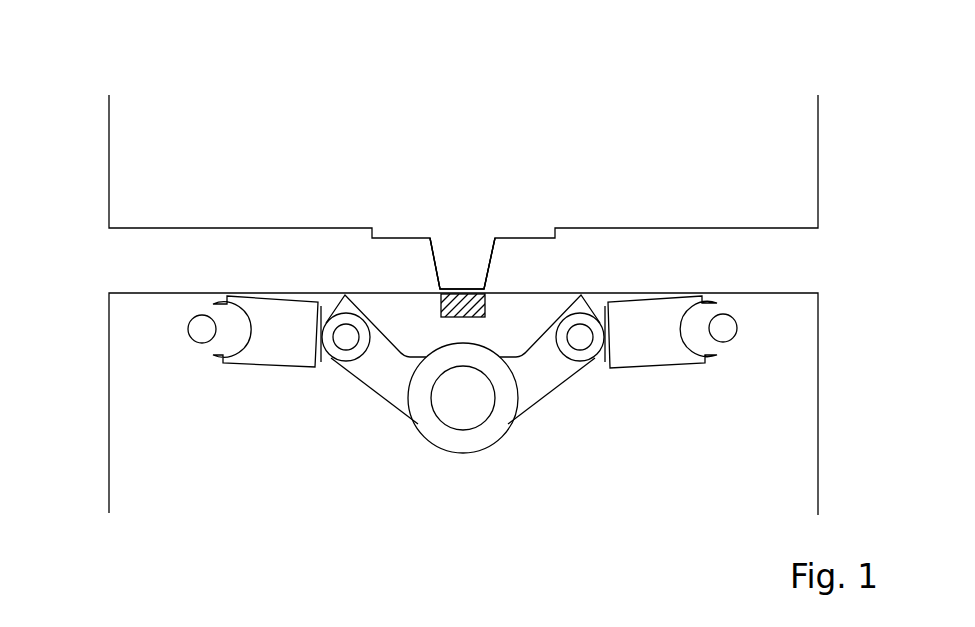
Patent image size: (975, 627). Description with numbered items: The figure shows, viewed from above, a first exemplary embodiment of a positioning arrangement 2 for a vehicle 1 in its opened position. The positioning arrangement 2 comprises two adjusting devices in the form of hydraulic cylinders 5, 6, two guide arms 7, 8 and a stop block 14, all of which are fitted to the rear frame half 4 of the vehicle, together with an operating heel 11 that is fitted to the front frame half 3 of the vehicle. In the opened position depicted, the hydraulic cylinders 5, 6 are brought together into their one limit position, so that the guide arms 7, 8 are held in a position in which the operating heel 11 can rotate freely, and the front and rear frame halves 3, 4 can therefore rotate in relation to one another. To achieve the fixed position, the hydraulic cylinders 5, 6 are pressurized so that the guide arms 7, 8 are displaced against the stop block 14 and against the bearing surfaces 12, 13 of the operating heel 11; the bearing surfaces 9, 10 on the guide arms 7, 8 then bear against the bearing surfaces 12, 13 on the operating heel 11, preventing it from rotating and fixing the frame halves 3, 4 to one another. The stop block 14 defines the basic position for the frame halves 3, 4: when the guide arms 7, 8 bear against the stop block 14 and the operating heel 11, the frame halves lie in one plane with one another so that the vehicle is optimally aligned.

The vehicle 1 is at (38, 20).
The positioning arrangement 2 is at (284, 283).
The front frame half 3 is at (117, 147).
The rear frame half 4 is at (118, 385).
The hydraulic cylinder 5 is at (237, 353).
The hydraulic cylinder 6 is at (667, 353).
The guide arm 7 is at (367, 377).
The guide arm 8 is at (558, 377).
The bearing surface 9 is at (362, 307).
The bearing surface 10 is at (560, 316).
The operating heel 11 is at (463, 270).
The bearing surface 12 is at (437, 270).
The bearing surface 13 is at (488, 270).
The stop block 14 is at (453, 305).